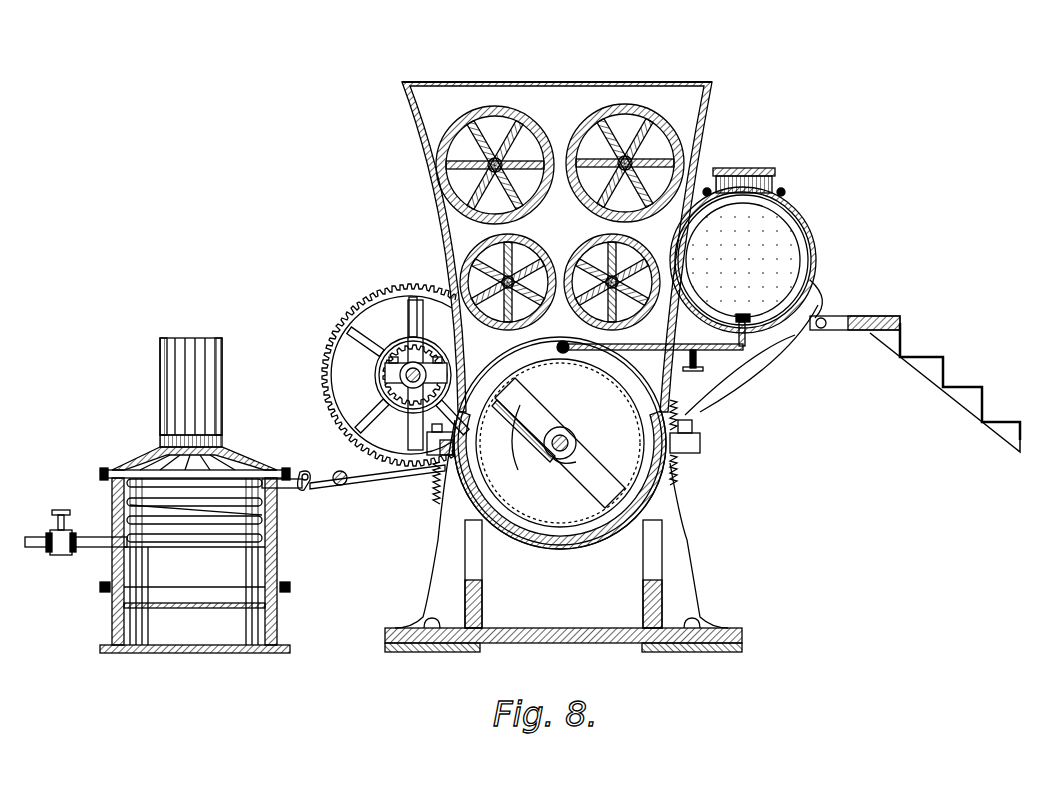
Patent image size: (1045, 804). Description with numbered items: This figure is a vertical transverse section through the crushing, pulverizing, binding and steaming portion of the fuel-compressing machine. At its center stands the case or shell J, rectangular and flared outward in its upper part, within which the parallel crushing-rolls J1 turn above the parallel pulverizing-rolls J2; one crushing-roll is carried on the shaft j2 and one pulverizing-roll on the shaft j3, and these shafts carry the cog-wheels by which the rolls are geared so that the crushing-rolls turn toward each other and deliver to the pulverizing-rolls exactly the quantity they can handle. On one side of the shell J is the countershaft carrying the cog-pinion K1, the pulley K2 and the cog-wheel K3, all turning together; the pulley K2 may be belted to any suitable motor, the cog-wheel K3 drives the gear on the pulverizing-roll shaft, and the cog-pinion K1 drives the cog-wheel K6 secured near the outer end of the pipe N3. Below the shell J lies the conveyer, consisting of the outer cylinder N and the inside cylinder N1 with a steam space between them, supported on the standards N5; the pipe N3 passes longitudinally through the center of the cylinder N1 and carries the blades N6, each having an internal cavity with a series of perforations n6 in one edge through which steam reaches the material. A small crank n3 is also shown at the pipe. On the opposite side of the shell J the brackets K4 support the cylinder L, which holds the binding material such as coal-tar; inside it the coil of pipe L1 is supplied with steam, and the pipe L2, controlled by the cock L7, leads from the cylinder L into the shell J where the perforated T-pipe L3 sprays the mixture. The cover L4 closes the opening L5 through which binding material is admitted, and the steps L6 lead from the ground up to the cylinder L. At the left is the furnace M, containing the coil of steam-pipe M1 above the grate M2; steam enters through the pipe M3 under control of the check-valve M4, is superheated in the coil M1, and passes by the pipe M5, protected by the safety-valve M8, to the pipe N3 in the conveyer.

The case or shell J is at (710, 112).
The crushing-rolls J1 is at (560, 153).
The shaft of crushing-roll j2 is at (440, 178).
The pulverizing-rolls J2 is at (545, 256).
The shaft of pulverizing-roll j3 is at (495, 335).
The cylinder L is at (790, 207).
The coil of pipe L1 is at (808, 235).
The pipe L2 is at (628, 351).
The perforated T-pipe L3 is at (560, 353).
The cover L4 is at (746, 175).
The opening L5 is at (776, 172).
The steps L6 is at (960, 376).
The cock L7 is at (710, 358).
The cog-pinion K1 is at (385, 350).
The pulley K2 is at (360, 376).
The cog-wheel K3 is at (395, 363).
The brackets K4 is at (735, 355).
The cog-wheel K6 is at (440, 492).
The cylinder N is at (518, 510).
The inside cylinder N1 is at (493, 470).
The pipe N3 is at (576, 438).
The standards N5 is at (445, 540).
The blades N6 is at (560, 443).
The crank n3 is at (557, 462).
The perforations n6 is at (508, 432).
The furnace M is at (197, 495).
The coil of steam-pipe M1 is at (270, 516).
The grate M2 is at (192, 620).
The pipe M3 is at (70, 532).
The check-valve M4 is at (58, 508).
The pipe M5 is at (382, 482).
The safety-valve M8 is at (318, 466).